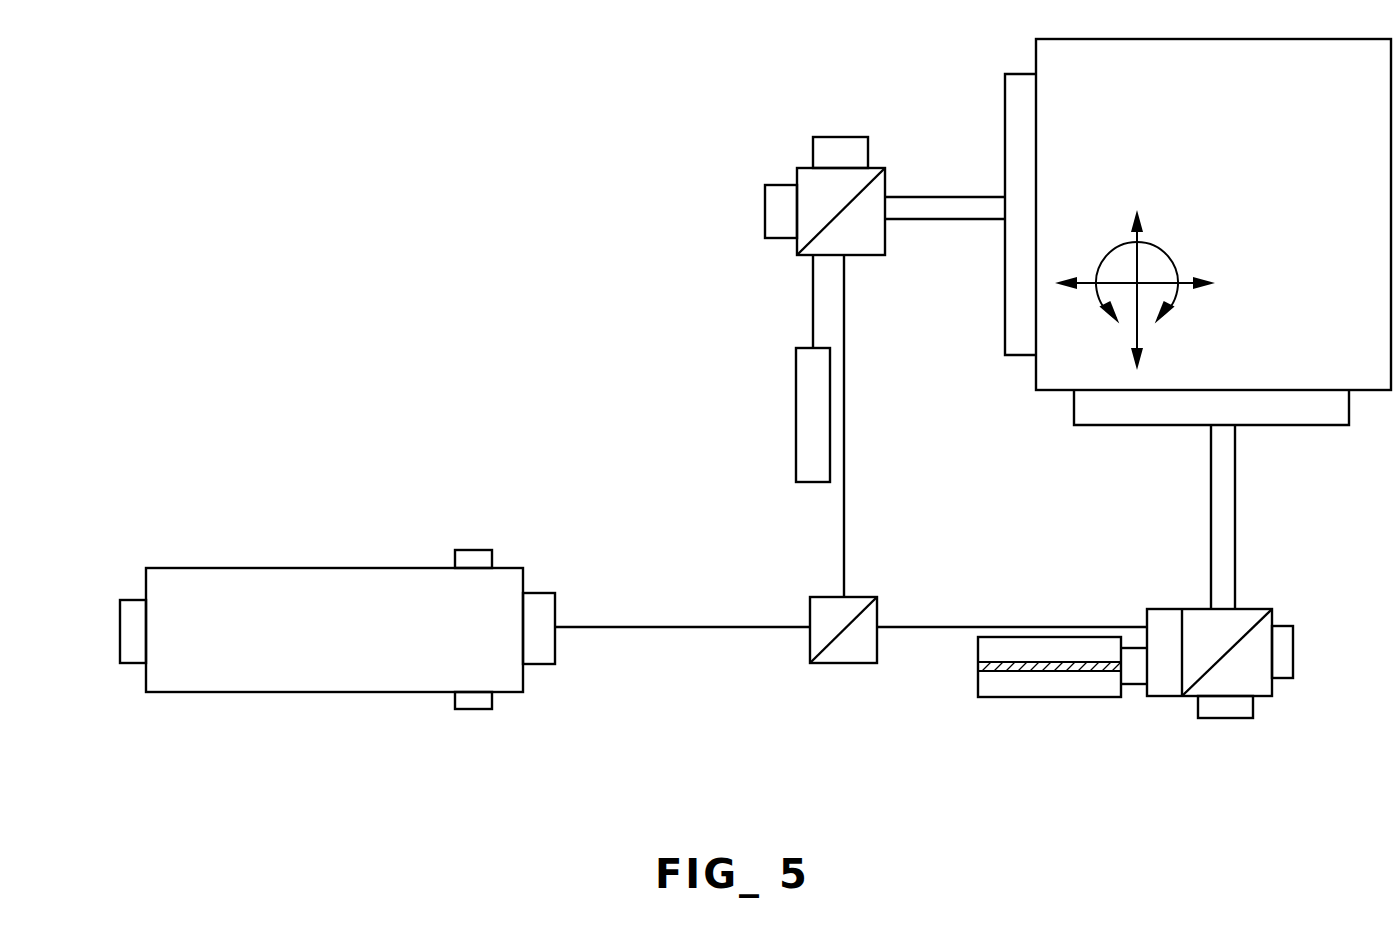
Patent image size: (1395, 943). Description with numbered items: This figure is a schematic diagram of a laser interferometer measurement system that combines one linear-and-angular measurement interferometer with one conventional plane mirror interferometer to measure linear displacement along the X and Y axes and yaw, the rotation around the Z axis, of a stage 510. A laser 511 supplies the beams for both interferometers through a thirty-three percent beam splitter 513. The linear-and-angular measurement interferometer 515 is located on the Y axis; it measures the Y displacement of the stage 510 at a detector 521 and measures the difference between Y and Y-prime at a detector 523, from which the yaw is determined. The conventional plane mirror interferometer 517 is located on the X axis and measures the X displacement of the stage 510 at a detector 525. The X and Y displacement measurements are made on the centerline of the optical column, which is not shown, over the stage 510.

The stage 510 is at (1367, 94).
The laser 511 is at (350, 568).
The 33% beam splitter 513 is at (810, 600).
The linear-and-angular measurement interferometer 515 is at (1272, 609).
The conventional plane mirror interferometer 517 is at (797, 168).
The detector 521 is at (970, 647).
The detector 523 is at (970, 686).
The detector 525 is at (796, 420).